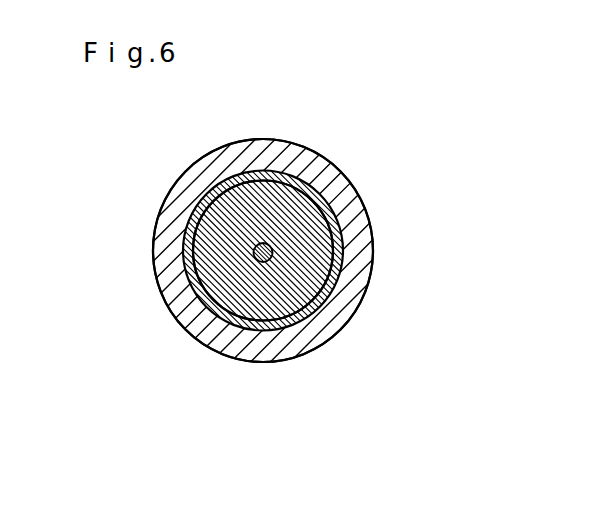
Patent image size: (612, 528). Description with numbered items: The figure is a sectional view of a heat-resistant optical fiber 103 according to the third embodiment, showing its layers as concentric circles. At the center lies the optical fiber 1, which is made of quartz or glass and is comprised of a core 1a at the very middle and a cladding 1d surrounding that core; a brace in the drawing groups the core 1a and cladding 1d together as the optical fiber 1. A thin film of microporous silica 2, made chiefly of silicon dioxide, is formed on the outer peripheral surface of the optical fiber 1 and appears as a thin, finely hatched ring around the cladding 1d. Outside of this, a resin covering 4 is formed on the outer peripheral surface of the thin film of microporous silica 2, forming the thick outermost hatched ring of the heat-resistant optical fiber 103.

The heat-resistant optical fiber 103 is at (309, 118).
The resin covering 4 is at (163, 255).
The thin film of microporous silica 2 is at (310, 187).
The optical fiber 1 is at (462, 235).
The core 1a is at (272, 248).
The cladding 1d is at (303, 280).